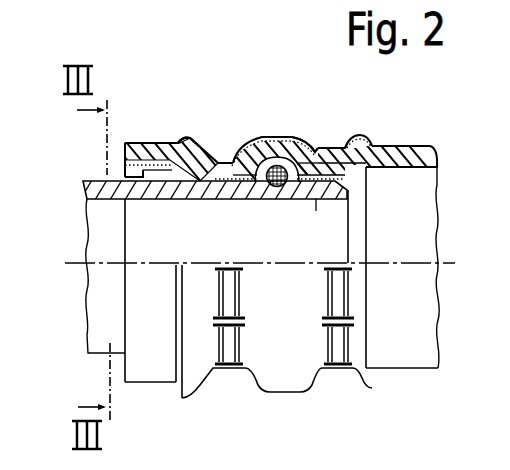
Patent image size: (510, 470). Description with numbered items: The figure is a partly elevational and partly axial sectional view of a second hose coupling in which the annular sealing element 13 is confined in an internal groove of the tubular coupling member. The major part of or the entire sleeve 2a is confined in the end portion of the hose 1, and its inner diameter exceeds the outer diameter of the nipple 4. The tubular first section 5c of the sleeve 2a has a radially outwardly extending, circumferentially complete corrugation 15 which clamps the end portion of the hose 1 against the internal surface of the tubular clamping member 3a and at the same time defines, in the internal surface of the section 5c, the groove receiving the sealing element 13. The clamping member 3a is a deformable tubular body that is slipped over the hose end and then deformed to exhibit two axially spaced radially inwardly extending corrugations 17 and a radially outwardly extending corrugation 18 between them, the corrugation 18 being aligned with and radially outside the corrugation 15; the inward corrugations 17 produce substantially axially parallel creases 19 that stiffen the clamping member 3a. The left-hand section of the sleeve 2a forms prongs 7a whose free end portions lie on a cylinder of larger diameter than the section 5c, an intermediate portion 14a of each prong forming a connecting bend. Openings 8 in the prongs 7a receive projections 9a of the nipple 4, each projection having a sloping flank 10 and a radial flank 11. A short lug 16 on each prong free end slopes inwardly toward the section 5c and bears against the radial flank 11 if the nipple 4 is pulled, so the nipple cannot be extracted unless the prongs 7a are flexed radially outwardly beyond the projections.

The hose 1 is at (419, 146).
The sleeve 2a is at (372, 219).
The tubular clamping member 3a is at (313, 129).
The nipple 4 is at (82, 182).
The tubular first section 5c is at (233, 178).
The prongs 7a is at (140, 146).
The openings 8 is at (164, 158).
The projections 9a is at (94, 220).
The sloping flank 10 is at (184, 139).
The radial flank 11 is at (91, 205).
The annular sealing element 13 is at (274, 135).
The intermediate portion 14a is at (101, 282).
The corrugation 15 is at (288, 140).
The lug 16 is at (127, 126).
The radially inwardly extending corrugations 17 is at (316, 211).
The radially outwardly extending corrugation 18 is at (282, 136).
The creases 19 is at (229, 370).